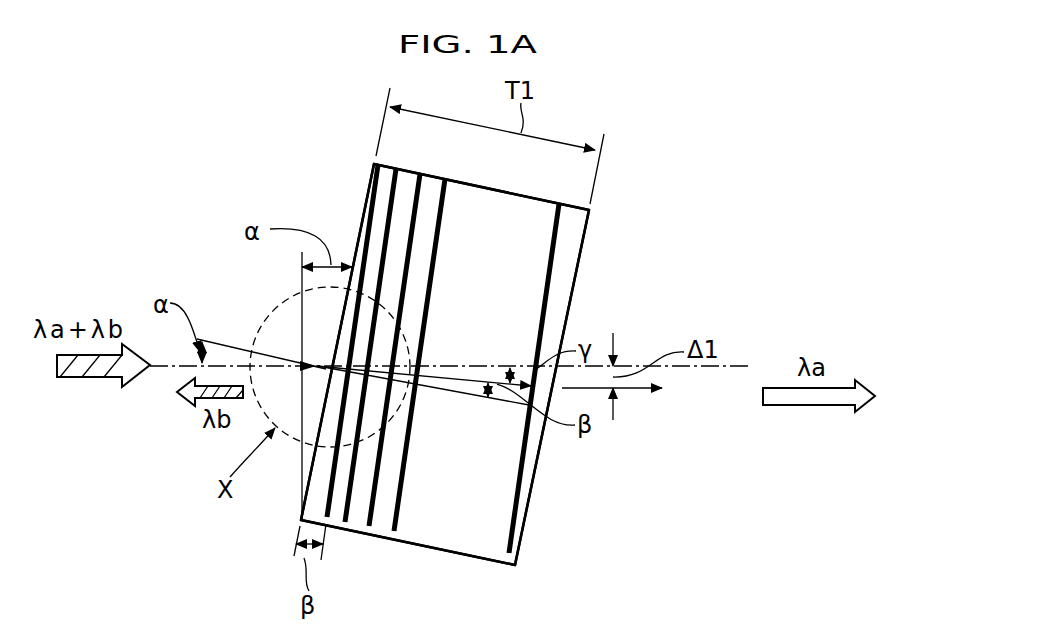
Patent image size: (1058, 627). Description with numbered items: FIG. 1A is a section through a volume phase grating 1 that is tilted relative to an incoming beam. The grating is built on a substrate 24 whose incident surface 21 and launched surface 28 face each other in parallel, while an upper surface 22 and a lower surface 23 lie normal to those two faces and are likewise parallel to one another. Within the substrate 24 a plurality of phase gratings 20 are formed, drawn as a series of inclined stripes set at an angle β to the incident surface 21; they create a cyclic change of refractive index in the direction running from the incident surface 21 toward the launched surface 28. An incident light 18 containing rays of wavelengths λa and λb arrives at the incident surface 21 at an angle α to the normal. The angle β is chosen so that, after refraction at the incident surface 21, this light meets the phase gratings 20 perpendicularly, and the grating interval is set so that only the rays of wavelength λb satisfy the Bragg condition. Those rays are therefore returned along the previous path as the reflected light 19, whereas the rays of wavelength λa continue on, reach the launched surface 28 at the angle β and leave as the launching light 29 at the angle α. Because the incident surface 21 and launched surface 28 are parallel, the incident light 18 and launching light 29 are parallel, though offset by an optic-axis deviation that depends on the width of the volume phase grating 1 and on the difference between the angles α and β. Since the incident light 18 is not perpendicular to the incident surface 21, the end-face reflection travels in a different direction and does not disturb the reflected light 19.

The volume phase grating 1 is at (590, 224).
The incident light 18 is at (71, 378).
The reflected light 19 is at (223, 386).
The phase gratings 20 is at (432, 213).
The incident surface 21 is at (368, 182).
The upper surface 22 is at (510, 192).
The lower surface 23 is at (427, 547).
The substrate 24 is at (490, 547).
The launched surface 28 is at (523, 537).
The launching light 29 is at (818, 406).